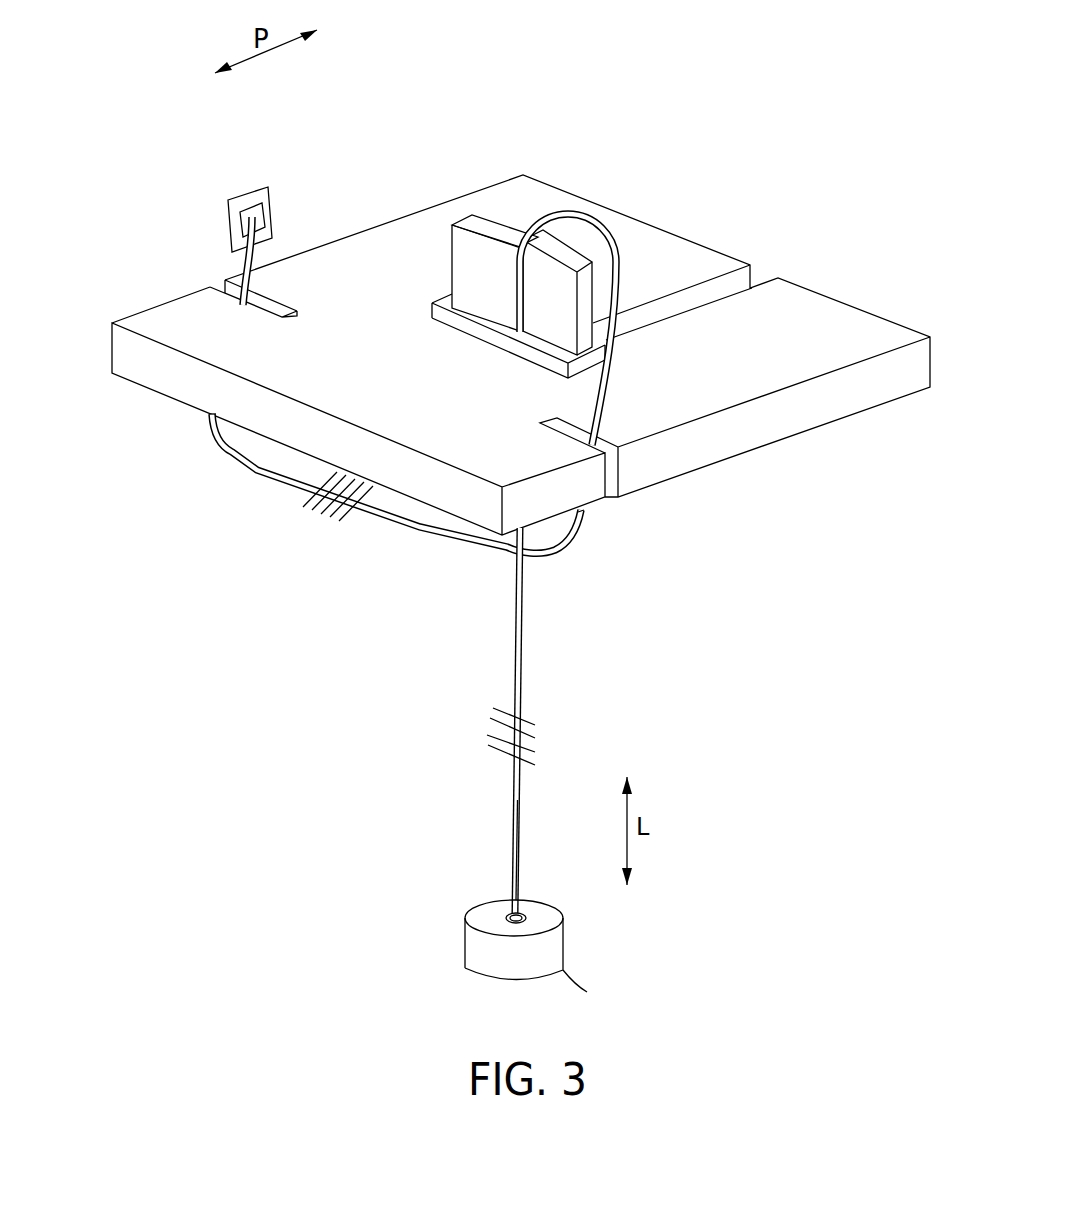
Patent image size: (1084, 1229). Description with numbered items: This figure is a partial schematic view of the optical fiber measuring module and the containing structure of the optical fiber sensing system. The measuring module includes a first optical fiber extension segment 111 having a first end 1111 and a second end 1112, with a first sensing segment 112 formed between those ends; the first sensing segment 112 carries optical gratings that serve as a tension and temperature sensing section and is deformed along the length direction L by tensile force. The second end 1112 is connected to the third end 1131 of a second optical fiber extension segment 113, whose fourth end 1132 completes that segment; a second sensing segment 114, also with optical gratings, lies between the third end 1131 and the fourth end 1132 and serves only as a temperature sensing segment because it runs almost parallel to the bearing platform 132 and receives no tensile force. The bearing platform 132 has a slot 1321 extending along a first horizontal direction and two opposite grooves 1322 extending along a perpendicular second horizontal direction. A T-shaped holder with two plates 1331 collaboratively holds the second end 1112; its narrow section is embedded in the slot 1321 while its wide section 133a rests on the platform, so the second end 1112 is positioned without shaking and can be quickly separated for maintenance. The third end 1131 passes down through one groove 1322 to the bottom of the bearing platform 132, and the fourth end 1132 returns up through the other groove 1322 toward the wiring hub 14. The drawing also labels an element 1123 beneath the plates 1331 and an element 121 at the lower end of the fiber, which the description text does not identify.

The wiring hub 14 is at (262, 188).
The first optical fiber extension segment 111 is at (446, 720).
The first end 1111 is at (514, 817).
The second end 1112 is at (516, 262).
The first sensing segment 112 is at (490, 713).
The second optical fiber extension segment 113 is at (362, 506).
The third end 1131 is at (578, 517).
The fourth end 1132 is at (207, 417).
The second sensing segment 114 is at (305, 503).
The base 1123 is at (490, 333).
The weight 121 is at (482, 950).
The bearing platform 132 is at (521, 368).
The slot 1321 is at (732, 290).
The grooves 1322 is at (283, 314).
The plates 1331 is at (453, 225).
The wide section 133a is at (470, 214).